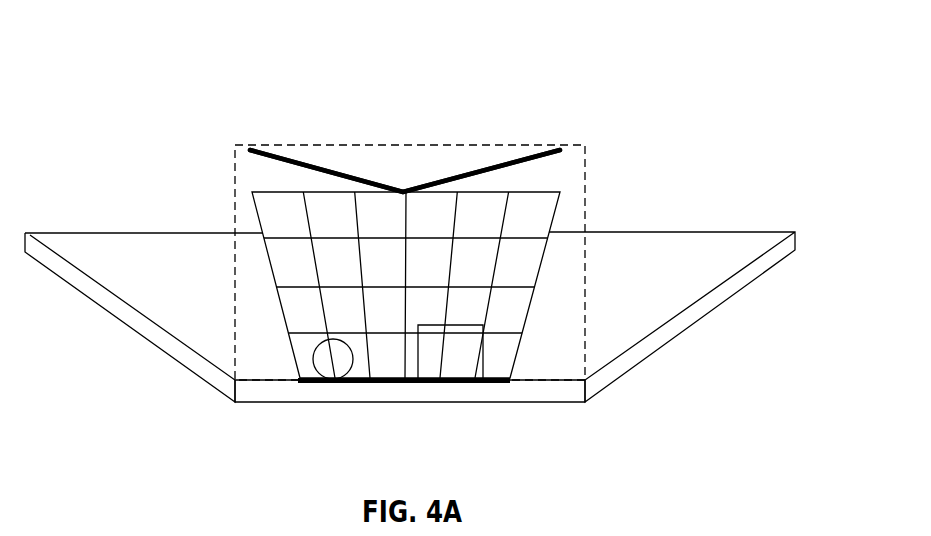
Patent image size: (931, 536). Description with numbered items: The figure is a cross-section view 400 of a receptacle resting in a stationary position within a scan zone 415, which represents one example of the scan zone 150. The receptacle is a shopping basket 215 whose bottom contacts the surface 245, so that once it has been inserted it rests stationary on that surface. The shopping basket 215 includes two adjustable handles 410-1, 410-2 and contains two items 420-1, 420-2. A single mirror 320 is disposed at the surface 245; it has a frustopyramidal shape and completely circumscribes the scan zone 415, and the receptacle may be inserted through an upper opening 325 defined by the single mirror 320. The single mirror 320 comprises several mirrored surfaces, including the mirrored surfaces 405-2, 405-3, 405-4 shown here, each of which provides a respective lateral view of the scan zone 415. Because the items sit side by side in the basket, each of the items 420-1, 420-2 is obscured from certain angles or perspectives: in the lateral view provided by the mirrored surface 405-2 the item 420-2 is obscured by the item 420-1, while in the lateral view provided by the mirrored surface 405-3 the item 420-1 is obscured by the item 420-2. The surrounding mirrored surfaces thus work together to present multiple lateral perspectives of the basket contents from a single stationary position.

The cross-section view 400 is at (708, 30).
The adjustable handle 410-1 is at (317, 163).
The adjustable handle 410-2 is at (525, 157).
The scan zone 415 is at (375, 132).
The scan zone 150 is at (262, 147).
The shopping basket 215 is at (553, 222).
The upper opening 325 is at (693, 197).
The single mirror 320 is at (753, 282).
The mirrored surface 405-2 is at (128, 327).
The mirrored surface 405-3 is at (673, 317).
The mirrored surface 405-4 is at (117, 248).
The item 420-1 is at (310, 360).
The item 420-2 is at (418, 352).
The surface 245 is at (533, 388).